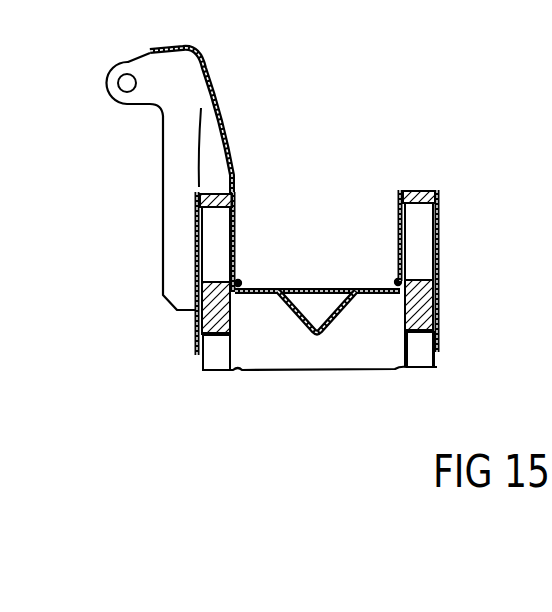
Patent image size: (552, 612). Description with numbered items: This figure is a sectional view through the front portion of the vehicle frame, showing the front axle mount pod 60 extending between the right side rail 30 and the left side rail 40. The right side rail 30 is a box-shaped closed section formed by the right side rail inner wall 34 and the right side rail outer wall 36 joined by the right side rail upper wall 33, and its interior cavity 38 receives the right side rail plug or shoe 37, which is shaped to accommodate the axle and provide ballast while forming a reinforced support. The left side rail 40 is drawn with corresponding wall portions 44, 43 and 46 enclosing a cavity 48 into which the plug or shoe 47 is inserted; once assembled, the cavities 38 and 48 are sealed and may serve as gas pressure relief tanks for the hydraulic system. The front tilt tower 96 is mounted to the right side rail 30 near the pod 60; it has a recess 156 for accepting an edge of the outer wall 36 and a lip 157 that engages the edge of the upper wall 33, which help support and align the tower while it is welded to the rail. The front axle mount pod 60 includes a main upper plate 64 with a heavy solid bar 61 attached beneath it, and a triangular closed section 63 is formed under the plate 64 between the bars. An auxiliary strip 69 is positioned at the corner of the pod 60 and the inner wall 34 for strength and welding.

The recess 156 is at (210, 95).
The front tilt tower 96 is at (172, 155).
The right side rail outer wall 36 is at (195, 224).
The lip 157 is at (232, 192).
The right side rail upper wall 33 is at (226, 192).
The right side rail inner wall 34 is at (237, 220).
The right side rail 30 is at (198, 252).
The cavity 38 is at (213, 260).
The right side rail plug or shoe 37 is at (205, 372).
The main upper plate 64 is at (323, 290).
The front axle mount pod 60 is at (361, 291).
The triangular closed section 63 is at (338, 336).
The auxiliary strip 69 is at (240, 281).
The rear bar 61 is at (281, 362).
The right wall inner layer 44 is at (398, 208).
The left side rail 40 is at (440, 203).
The right wall top cap 43 is at (418, 192).
The right wall inner face 46 is at (440, 232).
The cavity 48 is at (420, 262).
The plug or shoe 47 is at (423, 357).